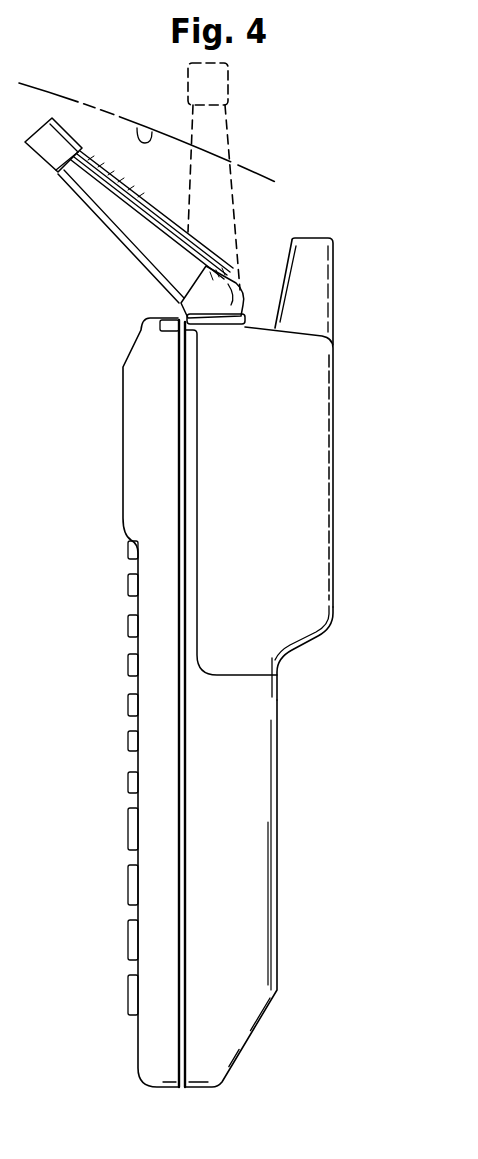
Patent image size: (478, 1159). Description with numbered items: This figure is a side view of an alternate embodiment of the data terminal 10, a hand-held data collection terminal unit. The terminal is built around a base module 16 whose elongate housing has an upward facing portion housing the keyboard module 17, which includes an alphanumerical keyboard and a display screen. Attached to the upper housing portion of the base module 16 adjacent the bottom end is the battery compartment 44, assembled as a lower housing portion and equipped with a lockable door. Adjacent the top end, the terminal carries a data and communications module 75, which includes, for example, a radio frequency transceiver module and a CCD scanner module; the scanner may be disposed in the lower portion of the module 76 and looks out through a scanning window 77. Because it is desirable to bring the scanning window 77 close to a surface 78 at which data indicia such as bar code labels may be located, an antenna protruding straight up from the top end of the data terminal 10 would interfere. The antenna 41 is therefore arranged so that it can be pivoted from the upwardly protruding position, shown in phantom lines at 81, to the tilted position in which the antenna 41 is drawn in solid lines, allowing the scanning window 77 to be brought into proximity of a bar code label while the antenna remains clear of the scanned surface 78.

The data terminal 10 is at (221, 662).
The base module 16 is at (162, 749).
The keyboard module 17 is at (132, 856).
The antenna 41 is at (119, 232).
The battery compartment 44 is at (265, 782).
The data and communications module 75 is at (300, 525).
The lower portion of the module 76 is at (320, 398).
The scanning window 77 is at (332, 290).
The surface with data indicia 78 is at (138, 125).
The upwardly protruding antenna position 81 is at (231, 235).